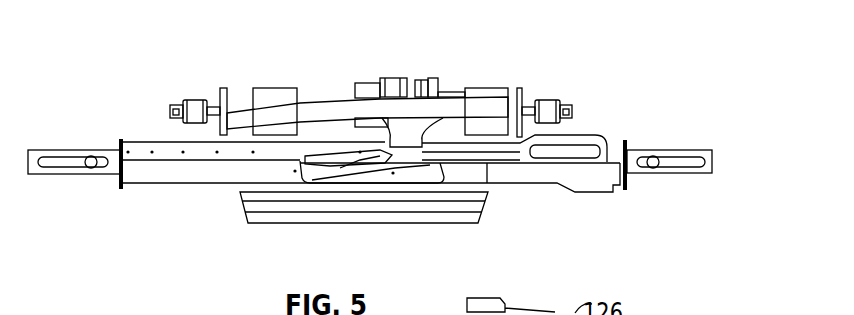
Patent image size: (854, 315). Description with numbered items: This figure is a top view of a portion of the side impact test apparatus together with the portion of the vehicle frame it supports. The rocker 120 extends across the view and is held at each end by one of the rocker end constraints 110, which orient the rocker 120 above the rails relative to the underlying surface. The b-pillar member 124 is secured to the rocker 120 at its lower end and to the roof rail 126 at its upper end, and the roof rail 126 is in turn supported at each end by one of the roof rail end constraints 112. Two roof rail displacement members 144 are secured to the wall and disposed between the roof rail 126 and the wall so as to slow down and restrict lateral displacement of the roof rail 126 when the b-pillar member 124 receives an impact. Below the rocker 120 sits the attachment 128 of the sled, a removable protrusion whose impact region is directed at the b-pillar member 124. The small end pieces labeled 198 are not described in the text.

The rocker end constraints 110 is at (89, 138).
The roof rail end constraints 112 is at (197, 85).
The rocker 120 is at (196, 185).
The b-pillar member 124 is at (375, 150).
The roof rail 126 is at (312, 100).
The attachment 128 is at (468, 224).
The roof rail displacement members 144 is at (262, 88).
The end bracket 198 is at (176, 107).